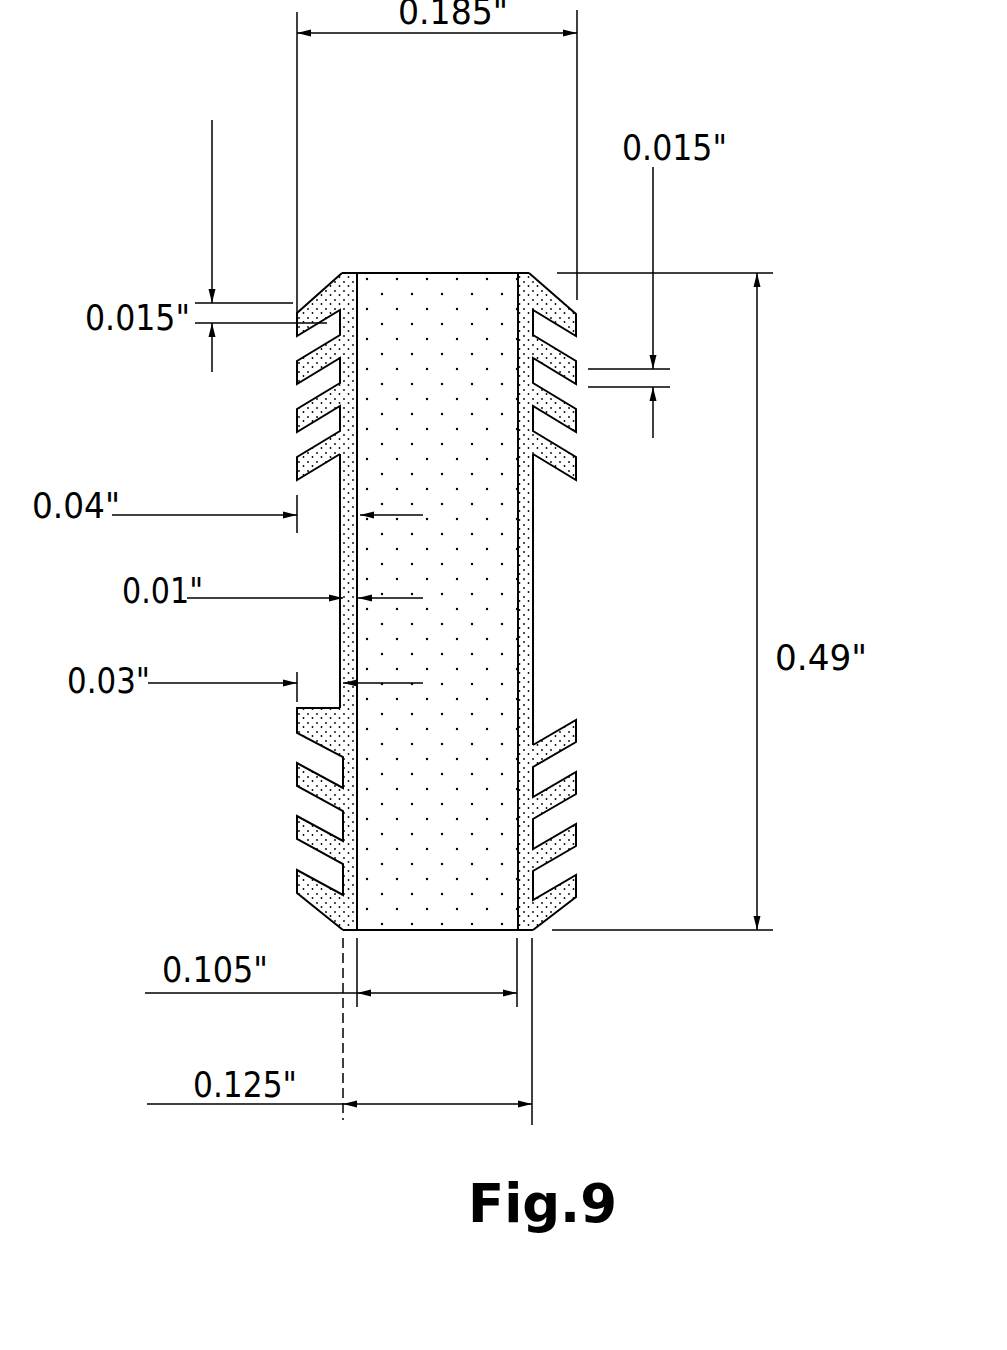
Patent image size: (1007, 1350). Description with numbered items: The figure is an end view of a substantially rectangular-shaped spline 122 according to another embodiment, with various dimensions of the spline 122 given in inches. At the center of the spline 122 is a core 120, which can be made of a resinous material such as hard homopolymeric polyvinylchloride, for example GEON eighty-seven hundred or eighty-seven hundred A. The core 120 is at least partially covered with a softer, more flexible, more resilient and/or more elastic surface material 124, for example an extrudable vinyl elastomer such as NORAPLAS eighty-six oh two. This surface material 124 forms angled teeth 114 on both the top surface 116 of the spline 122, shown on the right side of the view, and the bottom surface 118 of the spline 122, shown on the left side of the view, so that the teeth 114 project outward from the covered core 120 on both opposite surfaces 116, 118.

The teeth 114 is at (576, 477).
The top surface 116 is at (533, 682).
The bottom surface 118 is at (342, 708).
The core 120 is at (480, 567).
The spline 122 is at (472, 267).
The surface material 124 is at (290, 451).